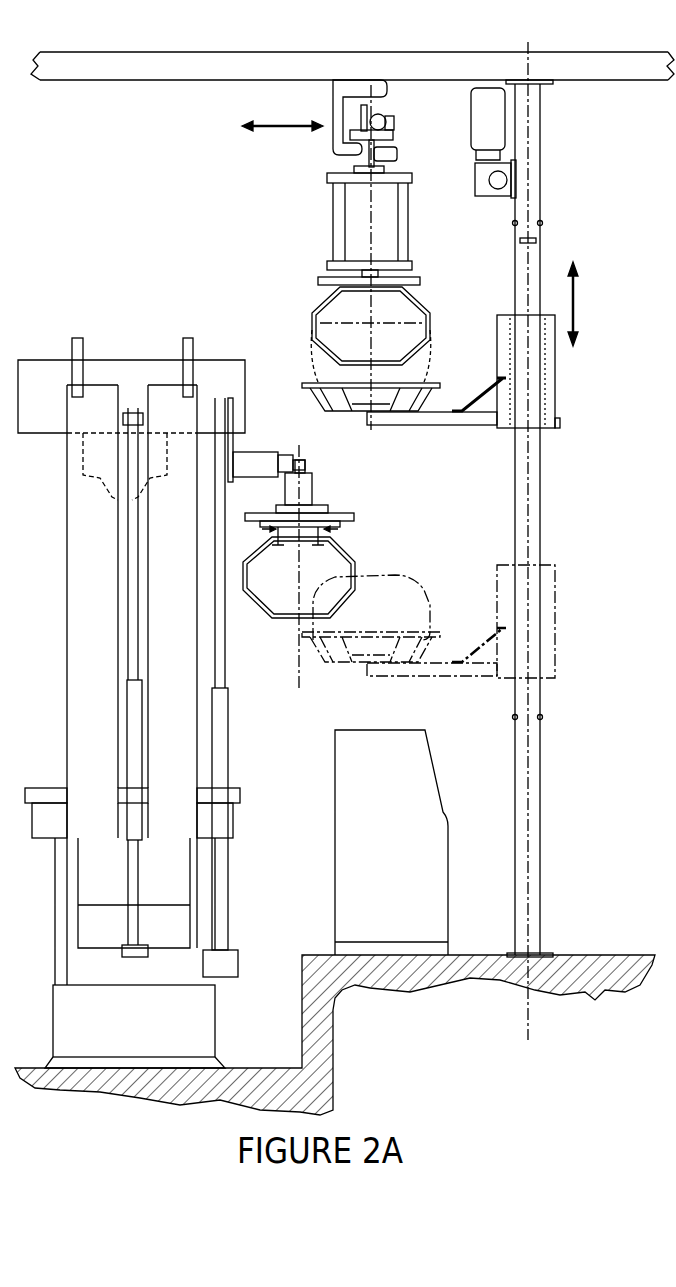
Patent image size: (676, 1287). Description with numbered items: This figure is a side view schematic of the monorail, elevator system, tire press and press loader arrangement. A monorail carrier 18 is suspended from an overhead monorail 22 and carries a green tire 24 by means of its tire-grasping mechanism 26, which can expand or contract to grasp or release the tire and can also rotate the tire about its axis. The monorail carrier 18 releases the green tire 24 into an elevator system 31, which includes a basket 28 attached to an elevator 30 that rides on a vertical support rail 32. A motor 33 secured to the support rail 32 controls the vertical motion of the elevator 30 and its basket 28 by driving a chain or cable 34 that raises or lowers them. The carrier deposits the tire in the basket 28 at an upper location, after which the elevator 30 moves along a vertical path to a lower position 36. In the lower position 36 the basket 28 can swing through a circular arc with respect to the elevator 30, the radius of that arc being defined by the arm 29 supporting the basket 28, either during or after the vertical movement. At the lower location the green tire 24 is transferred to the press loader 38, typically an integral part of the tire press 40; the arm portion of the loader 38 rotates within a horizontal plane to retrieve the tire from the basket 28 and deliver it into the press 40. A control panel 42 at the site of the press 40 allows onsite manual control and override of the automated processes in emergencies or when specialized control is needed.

The monorail carrier 18 is at (352, 85).
The monorail 22 is at (278, 66).
The green tire 24 is at (425, 323).
The tire-grasping mechanism 26 is at (421, 175).
The basket 28 is at (441, 400).
The arm 29 is at (477, 421).
The elevator 30 is at (553, 391).
The elevator system 31 is at (606, 156).
The vertical support rail 32 is at (535, 168).
The motor 33 is at (488, 122).
The chain or cable 34 is at (511, 246).
The lower position 36 is at (572, 565).
The press loader 38 is at (356, 455).
The tire press 40 is at (134, 378).
The control panel 42 is at (447, 800).